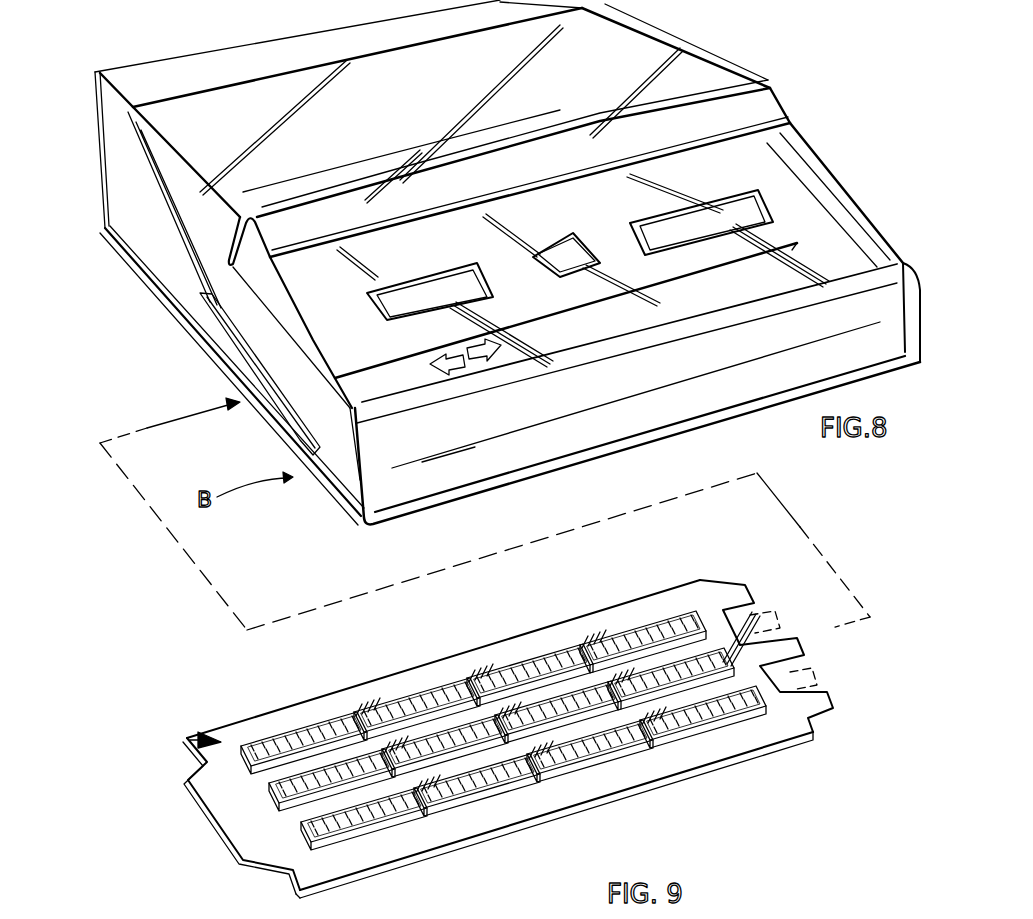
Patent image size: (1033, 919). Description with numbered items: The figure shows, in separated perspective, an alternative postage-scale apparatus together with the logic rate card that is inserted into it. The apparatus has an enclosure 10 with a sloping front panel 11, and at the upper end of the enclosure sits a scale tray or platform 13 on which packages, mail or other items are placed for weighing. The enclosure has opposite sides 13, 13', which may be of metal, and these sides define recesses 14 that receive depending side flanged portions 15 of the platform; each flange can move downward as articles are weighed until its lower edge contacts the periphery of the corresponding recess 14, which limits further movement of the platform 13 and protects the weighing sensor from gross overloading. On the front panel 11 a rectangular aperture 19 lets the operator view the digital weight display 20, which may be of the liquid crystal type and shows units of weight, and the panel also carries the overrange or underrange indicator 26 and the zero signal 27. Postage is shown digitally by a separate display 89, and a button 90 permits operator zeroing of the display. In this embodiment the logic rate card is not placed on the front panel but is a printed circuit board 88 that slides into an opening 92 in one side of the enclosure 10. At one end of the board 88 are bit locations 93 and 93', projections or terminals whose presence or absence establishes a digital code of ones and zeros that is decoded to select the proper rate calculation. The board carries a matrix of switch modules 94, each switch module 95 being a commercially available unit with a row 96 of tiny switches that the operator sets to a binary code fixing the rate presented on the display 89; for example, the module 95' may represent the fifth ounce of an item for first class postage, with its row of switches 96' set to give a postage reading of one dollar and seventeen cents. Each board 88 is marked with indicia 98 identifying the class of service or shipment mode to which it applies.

In FIG. 8, the enclosure 10 is at (372, 500).
In FIG. 8, the sloping front panel 11 is at (372, 520).
In FIG. 8, the scale tray 13 is at (435, 132).
In FIG. 8, the opposite side of enclosure 13' is at (843, 242).
In FIG. 8, the recess 14 is at (160, 200).
In FIG. 8, the depending side flanged portion 15 is at (153, 170).
In FIG. 8, the rectangular aperture 19 is at (367, 294).
In FIG. 8, the weight display 20 is at (367, 292).
In FIG. 8, the overrange or underrange indicator 26 is at (452, 367).
In FIG. 8, the zero signal 27 is at (481, 352).
In FIG. 9, the printed circuit board 88 is at (537, 813).
In FIG. 8, the postage display 89 is at (713, 210).
In FIG. 8, the button 90 is at (577, 246).
In FIG. 8, the opening 92 is at (233, 341).
In FIG. 9, the bit location 93 is at (813, 724).
In FIG. 9, the bit location 93' is at (840, 746).
In FIG. 9, the matrix of switch modules 94 is at (193, 737).
In FIG. 9, the switch module 95 is at (473, 737).
In FIG. 9, the switch module 95' is at (440, 660).
In FIG. 9, the row of tiny switches 96 is at (285, 834).
In FIG. 9, the row of switches 96' is at (249, 780).
In FIG. 9, the indicia 98 is at (247, 817).